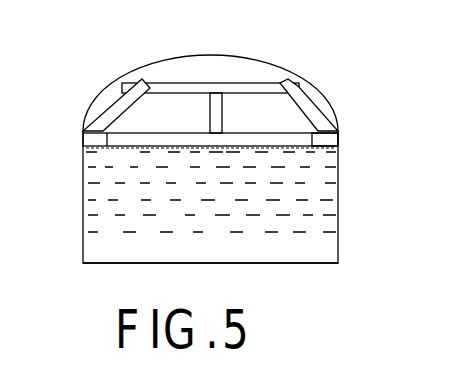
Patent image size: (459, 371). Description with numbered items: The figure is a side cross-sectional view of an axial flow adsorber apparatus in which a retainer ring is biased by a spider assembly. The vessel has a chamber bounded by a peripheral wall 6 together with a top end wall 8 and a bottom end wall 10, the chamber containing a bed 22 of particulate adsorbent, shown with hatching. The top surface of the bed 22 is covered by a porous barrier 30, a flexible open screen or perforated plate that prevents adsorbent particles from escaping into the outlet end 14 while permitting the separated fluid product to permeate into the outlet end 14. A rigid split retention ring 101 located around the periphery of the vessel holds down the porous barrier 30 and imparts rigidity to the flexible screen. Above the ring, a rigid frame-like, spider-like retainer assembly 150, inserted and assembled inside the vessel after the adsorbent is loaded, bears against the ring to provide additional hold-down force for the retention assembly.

The peripheral wall 6 is at (82, 242).
The bed 22 is at (115, 220).
The bottom end wall 10 is at (322, 263).
The porous barrier 30 is at (123, 143).
The rigid split retention ring 101 is at (330, 140).
The outlet end 14 is at (170, 73).
The top end wall 8 is at (140, 68).
The rigid frame-like retainer assembly 150 is at (116, 112).